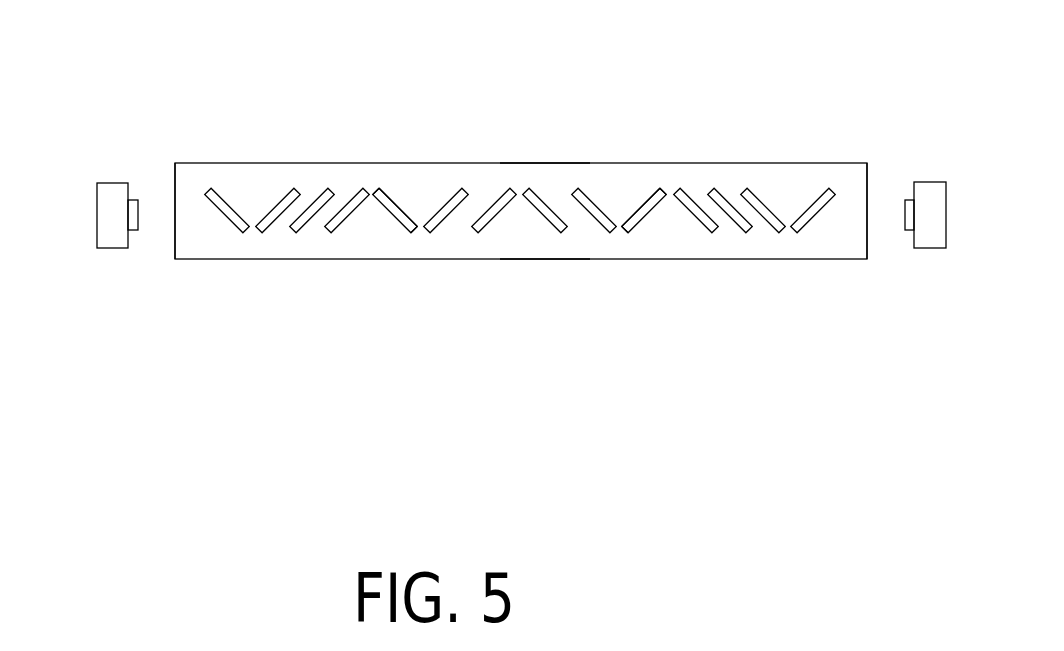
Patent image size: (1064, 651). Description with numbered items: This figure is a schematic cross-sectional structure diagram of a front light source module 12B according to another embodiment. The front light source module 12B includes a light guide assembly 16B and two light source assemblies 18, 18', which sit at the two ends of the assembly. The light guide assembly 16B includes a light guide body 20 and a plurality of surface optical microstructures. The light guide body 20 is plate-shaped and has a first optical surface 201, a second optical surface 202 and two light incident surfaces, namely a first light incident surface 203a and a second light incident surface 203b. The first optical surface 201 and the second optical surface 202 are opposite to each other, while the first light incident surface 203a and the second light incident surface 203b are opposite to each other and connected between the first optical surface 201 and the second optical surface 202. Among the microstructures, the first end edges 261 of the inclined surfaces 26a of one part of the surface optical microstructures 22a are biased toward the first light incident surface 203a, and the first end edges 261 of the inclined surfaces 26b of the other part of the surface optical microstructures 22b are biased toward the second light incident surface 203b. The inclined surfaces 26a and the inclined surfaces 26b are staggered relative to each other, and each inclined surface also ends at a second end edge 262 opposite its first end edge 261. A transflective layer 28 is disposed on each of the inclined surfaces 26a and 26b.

The front light source module 12B is at (77, 30).
The light source assembly 18 is at (117, 169).
The light source assembly 18' is at (925, 168).
The light guide assembly 16B is at (197, 163).
The light guide body 20 is at (732, 248).
The first optical surface 201 is at (542, 164).
The second optical surface 202 is at (545, 258).
The first light incident surface 203a is at (174, 239).
The second light incident surface 203b is at (868, 239).
The surface optical microstructure 22a is at (222, 228).
The surface optical microstructure 22b is at (820, 227).
The inclined surface 26a is at (399, 224).
The inclined surface 26b is at (641, 224).
The first end edge 261 is at (371, 189).
The second reflective surface 262 is at (417, 232).
The transflective layer 28 is at (396, 202).